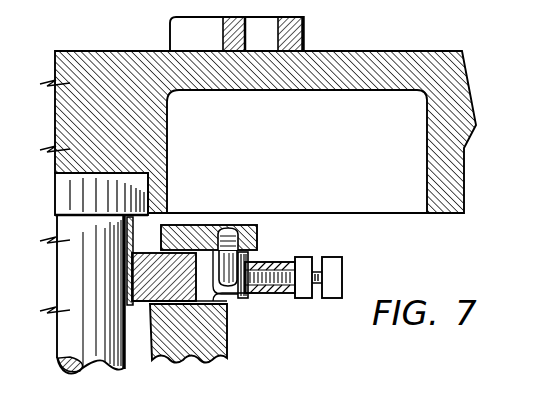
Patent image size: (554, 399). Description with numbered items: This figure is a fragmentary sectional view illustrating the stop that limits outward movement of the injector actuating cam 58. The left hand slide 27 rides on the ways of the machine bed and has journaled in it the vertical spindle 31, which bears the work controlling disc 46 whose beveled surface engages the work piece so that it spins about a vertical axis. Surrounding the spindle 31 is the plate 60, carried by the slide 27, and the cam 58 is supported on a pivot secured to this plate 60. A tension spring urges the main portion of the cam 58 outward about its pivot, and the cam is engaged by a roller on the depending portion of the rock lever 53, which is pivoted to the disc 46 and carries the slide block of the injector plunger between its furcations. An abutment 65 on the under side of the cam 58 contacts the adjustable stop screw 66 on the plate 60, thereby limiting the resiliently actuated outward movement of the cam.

The work controlling disc 46 is at (453, 95).
The actuating cam 58 is at (181, 33).
The rock lever 53 is at (248, 38).
The vertical spindle 31 is at (70, 268).
The plate 60 is at (143, 305).
The left hand slide 27 is at (204, 353).
The abutment 65 is at (240, 288).
The adjustable stop screw 66 is at (312, 266).